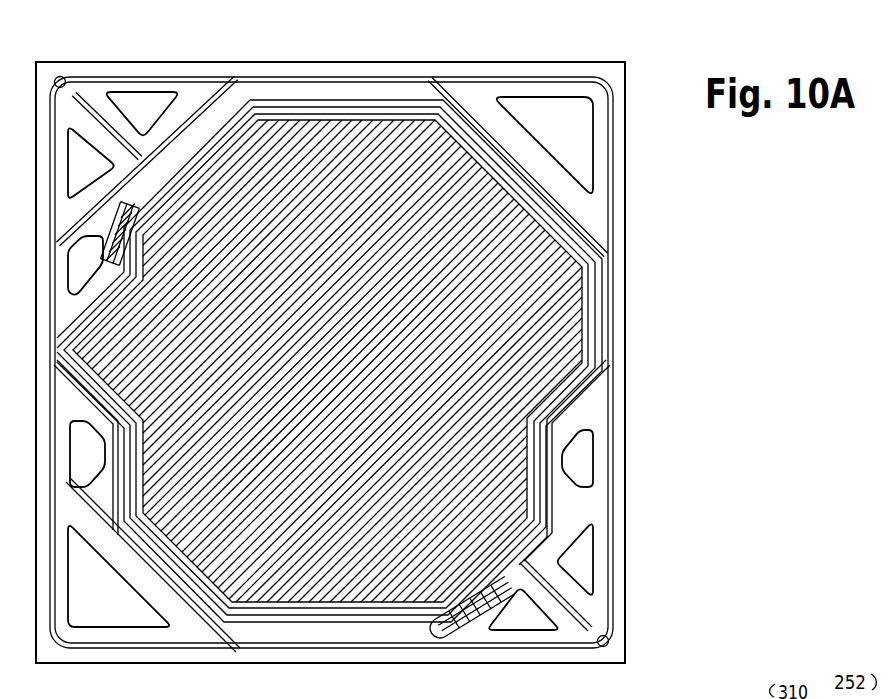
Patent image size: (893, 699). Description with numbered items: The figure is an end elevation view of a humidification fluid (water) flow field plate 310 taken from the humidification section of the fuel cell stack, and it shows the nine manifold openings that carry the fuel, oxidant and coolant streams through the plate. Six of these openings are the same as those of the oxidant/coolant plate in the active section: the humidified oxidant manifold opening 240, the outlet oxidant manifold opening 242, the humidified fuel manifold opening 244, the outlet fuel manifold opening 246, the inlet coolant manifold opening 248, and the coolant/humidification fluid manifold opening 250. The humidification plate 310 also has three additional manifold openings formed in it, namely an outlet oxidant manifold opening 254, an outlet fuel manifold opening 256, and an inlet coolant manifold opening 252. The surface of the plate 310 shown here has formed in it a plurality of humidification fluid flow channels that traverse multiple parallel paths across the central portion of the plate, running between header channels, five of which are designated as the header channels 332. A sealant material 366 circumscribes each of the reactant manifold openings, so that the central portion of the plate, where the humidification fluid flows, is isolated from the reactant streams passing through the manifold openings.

The humidification fluid flow field plate 310 is at (616, 89).
The sealant material 366 is at (533, 79).
The header channels 332 is at (300, 117).
The humidified oxidant manifold opening 240 is at (133, 617).
The outlet oxidant manifold opening 242 is at (582, 148).
The humidified fuel manifold opening 244 is at (585, 564).
The outlet fuel manifold opening 246 is at (145, 107).
The inlet coolant manifold opening 248 is at (79, 137).
The coolant/humidification fluid manifold opening 250 is at (528, 622).
The inlet coolant manifold opening 252 is at (80, 268).
The outlet oxidant manifold opening 254 is at (80, 449).
The outlet fuel manifold opening 256 is at (586, 455).